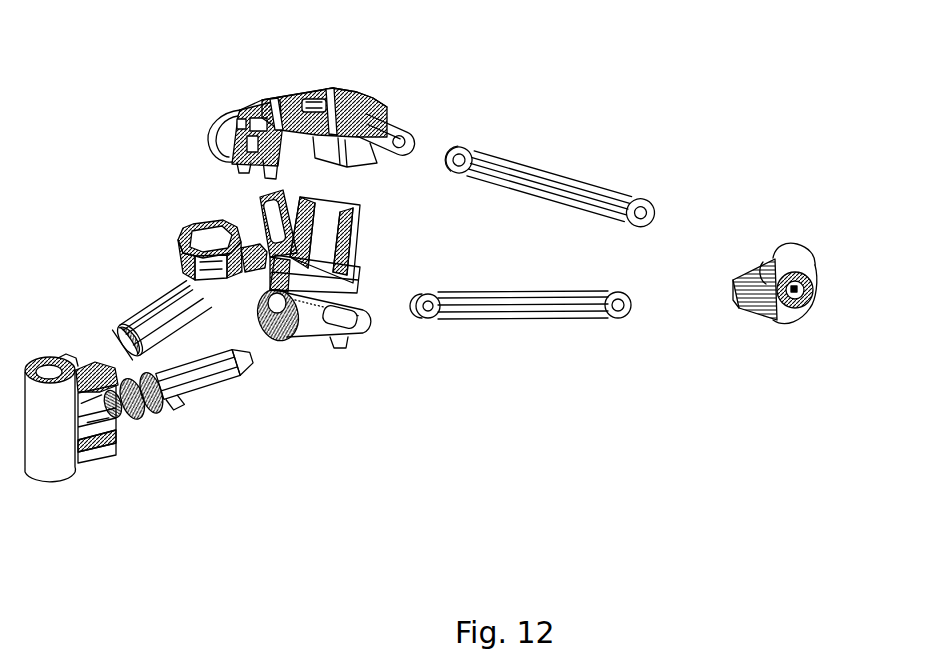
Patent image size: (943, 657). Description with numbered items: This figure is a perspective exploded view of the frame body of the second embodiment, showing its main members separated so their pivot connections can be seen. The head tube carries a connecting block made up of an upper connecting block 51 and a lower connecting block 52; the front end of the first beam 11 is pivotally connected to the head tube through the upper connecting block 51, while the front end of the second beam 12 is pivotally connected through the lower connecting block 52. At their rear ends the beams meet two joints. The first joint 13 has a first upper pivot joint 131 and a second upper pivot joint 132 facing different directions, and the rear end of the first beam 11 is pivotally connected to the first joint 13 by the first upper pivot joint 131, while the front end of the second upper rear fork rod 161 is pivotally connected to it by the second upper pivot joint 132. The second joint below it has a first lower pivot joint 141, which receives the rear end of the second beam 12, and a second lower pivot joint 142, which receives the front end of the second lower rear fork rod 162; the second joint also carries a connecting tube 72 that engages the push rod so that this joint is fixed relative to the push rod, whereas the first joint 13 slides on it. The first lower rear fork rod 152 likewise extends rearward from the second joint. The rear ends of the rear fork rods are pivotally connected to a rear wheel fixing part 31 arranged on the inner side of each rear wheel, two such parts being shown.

The first beam 11 is at (118, 325).
The second beam 12 is at (210, 428).
The first joint 13 is at (357, 82).
The rear wheel fixing part 31 is at (217, 120).
The upper connecting block 51 is at (85, 367).
The lower connecting block 52 is at (97, 500).
The connecting tube 72 is at (358, 231).
The first upper pivot joint 131 is at (318, 92).
The second upper pivot joint 132 is at (400, 112).
The first lower pivot joint 141 is at (293, 338).
The second lower pivot joint 142 is at (367, 332).
The first lower rear fork rod 152 is at (257, 207).
The second upper rear fork rod 161 is at (543, 168).
The second lower rear fork rod 162 is at (563, 320).